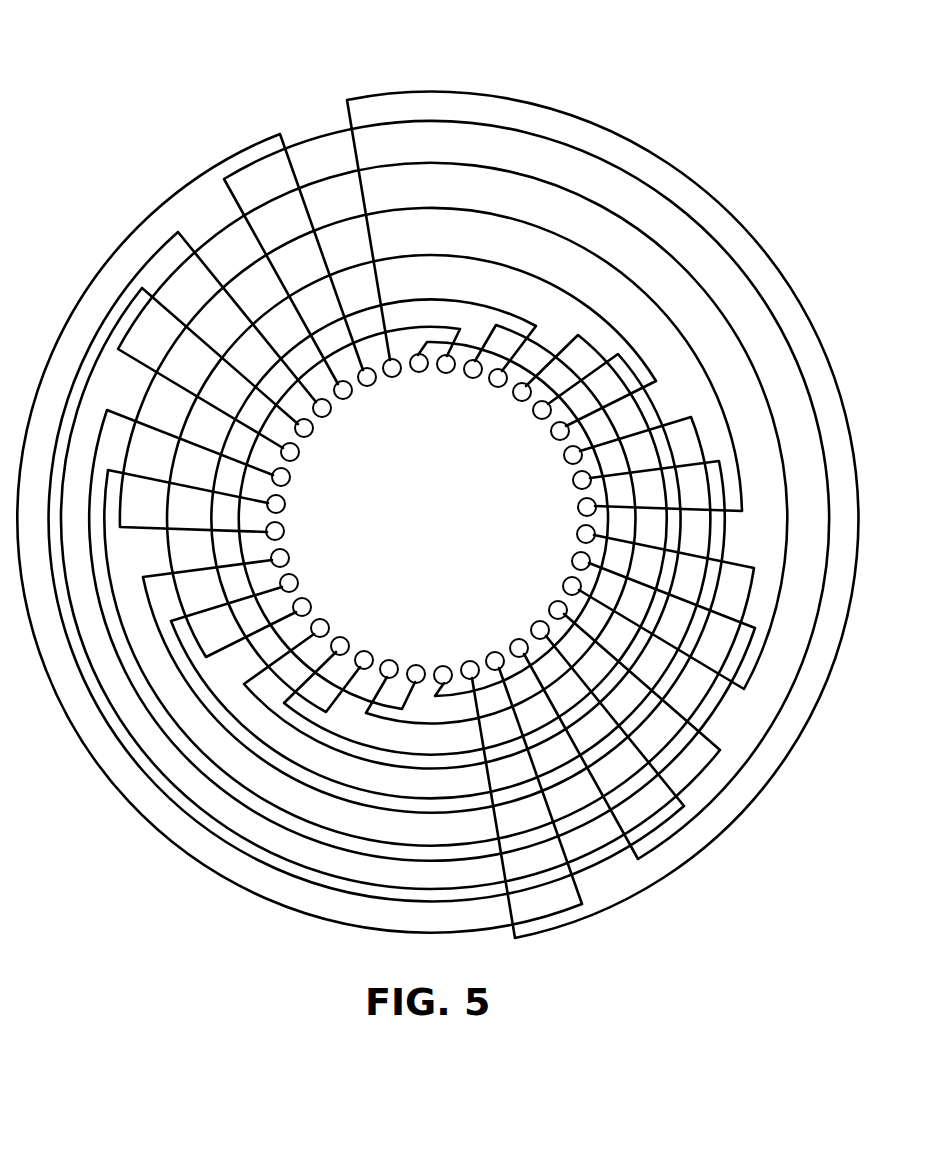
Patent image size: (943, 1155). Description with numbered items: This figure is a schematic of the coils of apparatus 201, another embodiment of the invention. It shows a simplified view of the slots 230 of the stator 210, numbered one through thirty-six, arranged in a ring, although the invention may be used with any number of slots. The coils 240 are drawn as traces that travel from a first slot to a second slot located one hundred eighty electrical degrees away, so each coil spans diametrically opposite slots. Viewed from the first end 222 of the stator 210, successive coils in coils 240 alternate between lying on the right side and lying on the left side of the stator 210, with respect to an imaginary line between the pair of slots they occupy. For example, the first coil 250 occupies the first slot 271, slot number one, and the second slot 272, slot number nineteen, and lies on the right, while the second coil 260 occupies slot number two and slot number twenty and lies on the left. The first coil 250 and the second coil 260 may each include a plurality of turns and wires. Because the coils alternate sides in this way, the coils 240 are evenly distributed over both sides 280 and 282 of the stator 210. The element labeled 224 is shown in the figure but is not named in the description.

The apparatus 201 is at (158, 150).
The stator 210 is at (564, 460).
The first end 222 is at (352, 653).
The contact pad 224 is at (416, 663).
The slots 230 is at (428, 378).
The coils 240 is at (478, 96).
The first coil 250 is at (463, 372).
The second coil 260 is at (413, 378).
The first slot 271 is at (399, 448).
The second slot 272 is at (445, 663).
The side 280 is at (158, 855).
The side 282 is at (766, 240).